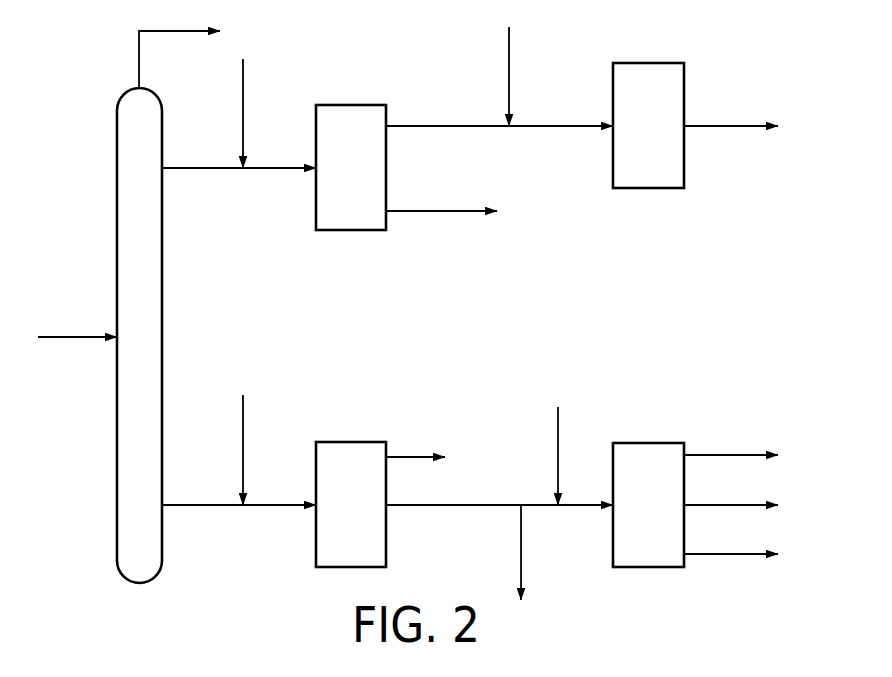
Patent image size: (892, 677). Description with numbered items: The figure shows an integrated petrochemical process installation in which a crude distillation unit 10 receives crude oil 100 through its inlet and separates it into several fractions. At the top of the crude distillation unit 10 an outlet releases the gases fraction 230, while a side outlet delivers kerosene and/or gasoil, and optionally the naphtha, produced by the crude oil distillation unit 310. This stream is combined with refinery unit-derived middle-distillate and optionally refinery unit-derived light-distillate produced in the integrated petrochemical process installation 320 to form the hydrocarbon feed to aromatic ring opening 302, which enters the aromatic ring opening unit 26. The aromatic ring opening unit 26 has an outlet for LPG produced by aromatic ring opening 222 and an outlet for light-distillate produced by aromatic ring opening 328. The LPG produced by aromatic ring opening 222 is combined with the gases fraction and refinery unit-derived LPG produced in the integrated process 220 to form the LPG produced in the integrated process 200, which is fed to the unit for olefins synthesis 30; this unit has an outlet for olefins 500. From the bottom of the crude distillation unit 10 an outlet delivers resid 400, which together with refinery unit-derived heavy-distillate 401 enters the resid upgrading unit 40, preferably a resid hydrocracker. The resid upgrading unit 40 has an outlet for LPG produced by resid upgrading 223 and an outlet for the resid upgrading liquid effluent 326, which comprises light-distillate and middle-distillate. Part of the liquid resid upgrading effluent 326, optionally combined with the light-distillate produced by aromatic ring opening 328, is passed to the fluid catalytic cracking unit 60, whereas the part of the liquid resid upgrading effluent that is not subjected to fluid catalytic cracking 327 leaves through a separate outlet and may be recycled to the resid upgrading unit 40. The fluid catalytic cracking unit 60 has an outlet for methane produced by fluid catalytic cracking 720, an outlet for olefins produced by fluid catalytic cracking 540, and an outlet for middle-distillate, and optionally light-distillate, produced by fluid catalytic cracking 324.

The crude distillation unit 10 is at (139, 335).
The aromatic ring opening unit 26 is at (351, 167).
The unit for olefins synthesis 30 is at (648, 125).
The resid upgrading unit 40 is at (351, 504).
The fluid catalytic cracking unit 60 is at (648, 505).
The crude oil 100 is at (66, 337).
The gases fraction 230 is at (139, 63).
The kerosene and/or gasoil, and optionally the naphtha, produced by crude oil distil 310 is at (200, 168).
The hydrocarbon feed to aromatic ring opening 302 is at (282, 168).
The refinery unit-derived middle-distillate and optionally the refinery unit-derived 320 is at (243, 78).
The LPG produced by aromatic ring opening 222 is at (450, 126).
The gases fraction and refinery unit-derived LPG produced in the integrated process 220 is at (509, 46).
The LPG produced in the integrated process 200 is at (578, 126).
The olefins 500 is at (733, 126).
The light-distillate produced by aromatic ring opening 328 is at (450, 211).
The resid 400 is at (200, 505).
The refinery unit-derived heavy-distillate 401 is at (243, 417).
The LPG produced by resid upgrading 223 is at (408, 457).
The resid upgrading liquid effluent 326 is at (498, 505).
The part of the liquid resid upgrading effluent that is not subjected to fluid catal 327 is at (521, 544).
The methane produced by fluid catalytic cracking 720 is at (733, 455).
The olefins produced by fluid catalytic cracking 540 is at (733, 504).
The middle-distillate, and optionally light-distillate, produced by fluid catalytic 324 is at (733, 554).